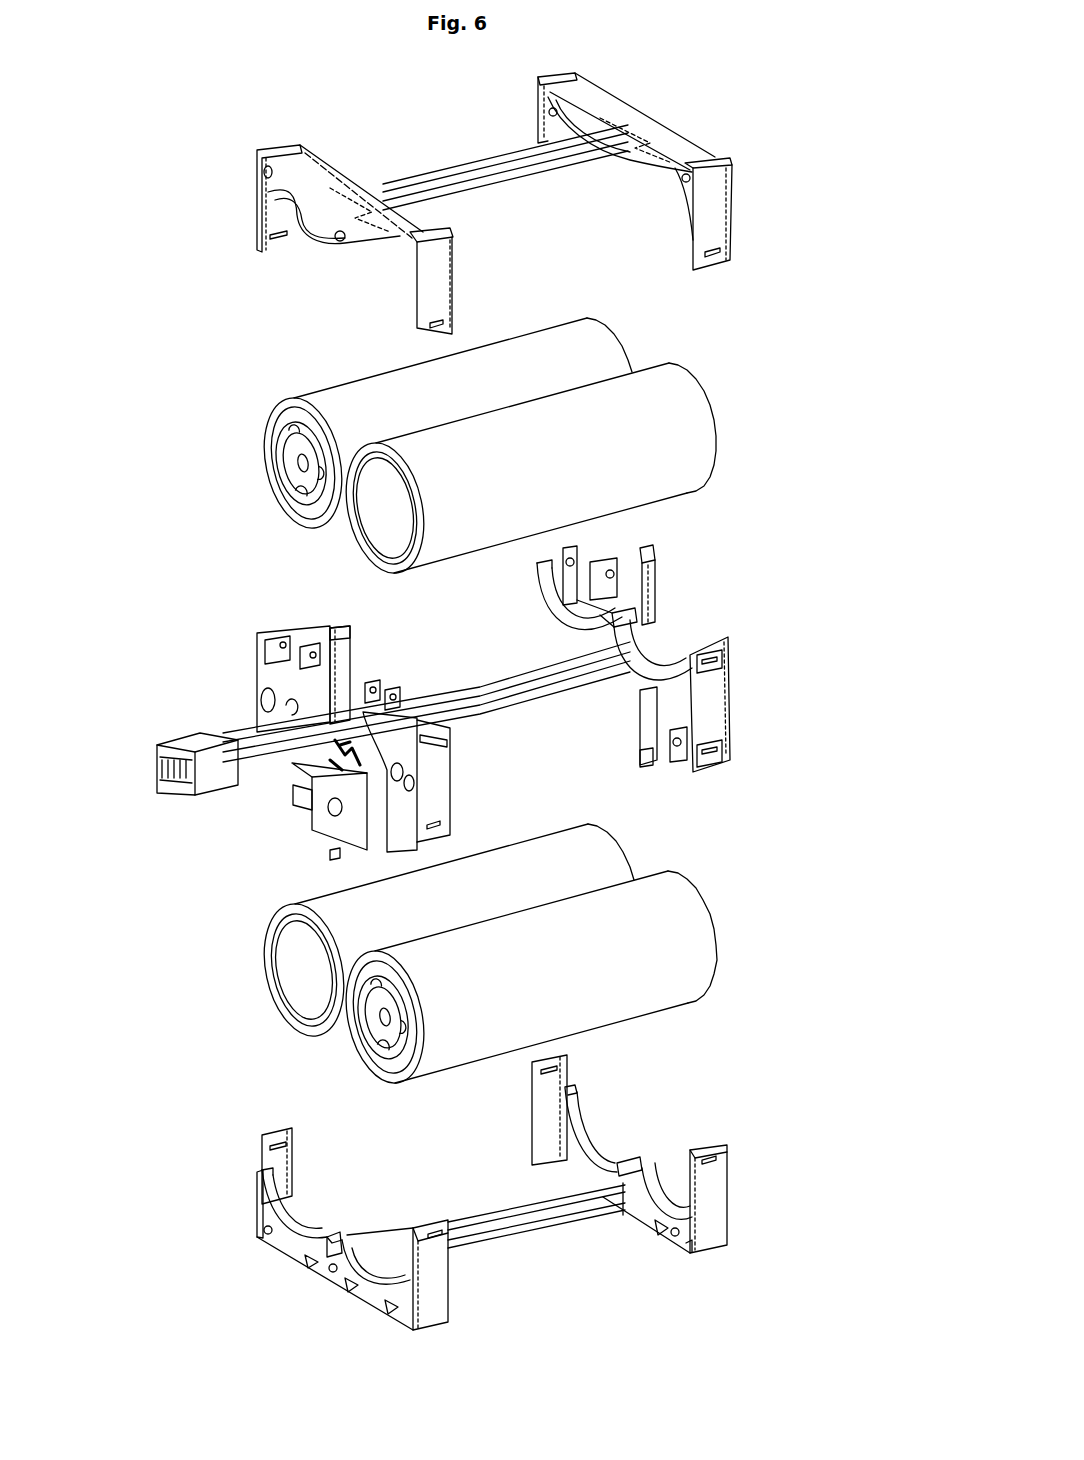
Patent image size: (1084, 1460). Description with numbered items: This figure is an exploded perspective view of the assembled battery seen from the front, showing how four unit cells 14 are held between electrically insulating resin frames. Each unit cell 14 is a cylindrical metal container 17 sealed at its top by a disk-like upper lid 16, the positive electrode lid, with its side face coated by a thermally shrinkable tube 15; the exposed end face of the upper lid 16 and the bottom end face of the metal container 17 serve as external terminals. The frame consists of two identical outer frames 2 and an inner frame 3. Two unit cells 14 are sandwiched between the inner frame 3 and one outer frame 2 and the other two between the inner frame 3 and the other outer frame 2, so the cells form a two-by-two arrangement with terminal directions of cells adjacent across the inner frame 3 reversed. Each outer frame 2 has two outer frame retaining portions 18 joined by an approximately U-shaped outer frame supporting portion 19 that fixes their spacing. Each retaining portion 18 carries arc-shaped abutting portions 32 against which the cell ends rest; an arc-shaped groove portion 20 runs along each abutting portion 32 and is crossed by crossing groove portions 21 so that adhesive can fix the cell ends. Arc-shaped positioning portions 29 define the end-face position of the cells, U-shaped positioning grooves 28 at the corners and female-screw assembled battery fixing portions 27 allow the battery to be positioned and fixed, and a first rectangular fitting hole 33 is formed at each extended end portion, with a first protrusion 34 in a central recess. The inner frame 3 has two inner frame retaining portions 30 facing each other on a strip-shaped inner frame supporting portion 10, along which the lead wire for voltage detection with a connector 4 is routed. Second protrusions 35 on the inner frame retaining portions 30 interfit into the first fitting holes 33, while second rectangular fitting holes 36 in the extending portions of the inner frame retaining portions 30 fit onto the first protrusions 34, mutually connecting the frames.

The outer frame 2 is at (484, 693).
The inner frame 3 is at (541, 694).
The lead wire for voltage detection with a connector 4 is at (183, 737).
The inner frame supporting portion 10 is at (550, 697).
The unit cell 14 is at (494, 664).
The thermally shrinkable tube 15 is at (388, 348).
The upper lid (positive electrode lid) 16 is at (293, 440).
The metal container 17 is at (380, 510).
The outer frame retaining portion 18 is at (320, 170).
The outer frame supporting portion 19 is at (480, 187).
The arc-shaped groove portion 20 is at (516, 698).
The crossing groove portion 21 is at (543, 592).
The assembled battery fixing portion 27 is at (258, 168).
The U-shaped positioning groove 28 is at (710, 155).
The arc-shaped positioning portion 29 is at (552, 112).
The inner frame retaining portion 30 is at (710, 703).
The arc-shaped abutting portion 32 is at (625, 648).
The first rectangular fitting hole 33 is at (722, 250).
The first protrusion 34 is at (340, 1247).
The second protrusion 35 is at (720, 655).
The second rectangular fitting hole 36 is at (337, 637).